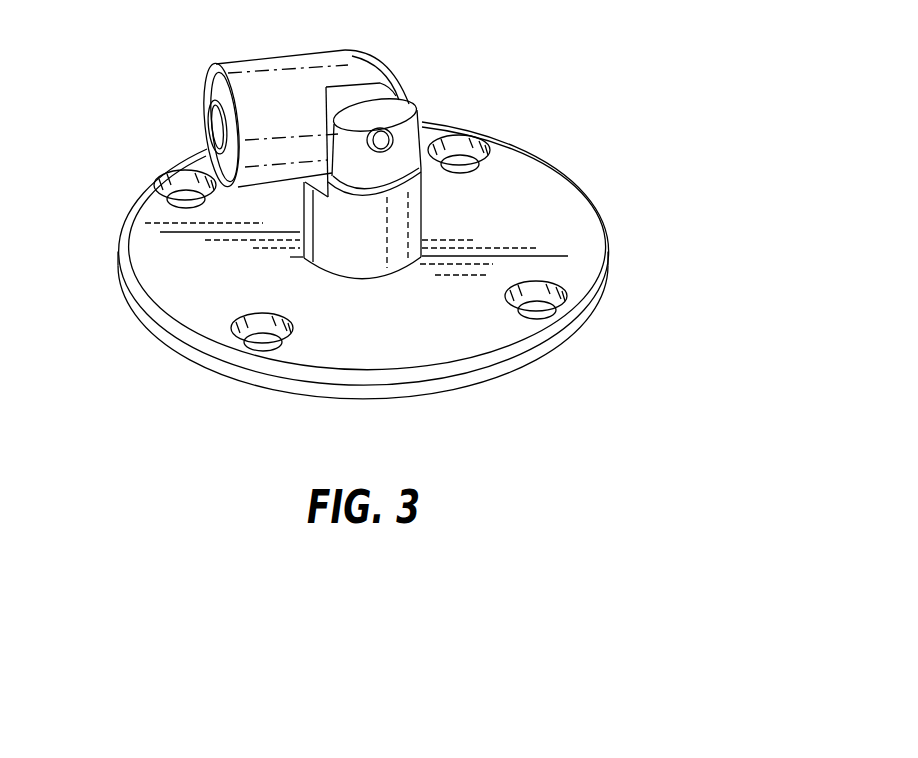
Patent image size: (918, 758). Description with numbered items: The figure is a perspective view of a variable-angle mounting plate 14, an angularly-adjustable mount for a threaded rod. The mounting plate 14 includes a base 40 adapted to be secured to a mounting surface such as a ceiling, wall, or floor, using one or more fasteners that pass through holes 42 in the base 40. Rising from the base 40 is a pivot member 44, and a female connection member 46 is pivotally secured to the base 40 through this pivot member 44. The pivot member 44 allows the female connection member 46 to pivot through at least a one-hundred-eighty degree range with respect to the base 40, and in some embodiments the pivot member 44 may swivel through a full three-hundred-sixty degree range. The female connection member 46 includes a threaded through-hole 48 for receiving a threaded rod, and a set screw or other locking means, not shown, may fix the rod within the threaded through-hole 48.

The variable-angle mounting plate 14 is at (417, 202).
The base 40 is at (578, 243).
The holes 42 is at (570, 291).
The pivot member 44 is at (412, 107).
The female connection member 46 is at (218, 111).
The threaded through-hole 48 is at (208, 124).